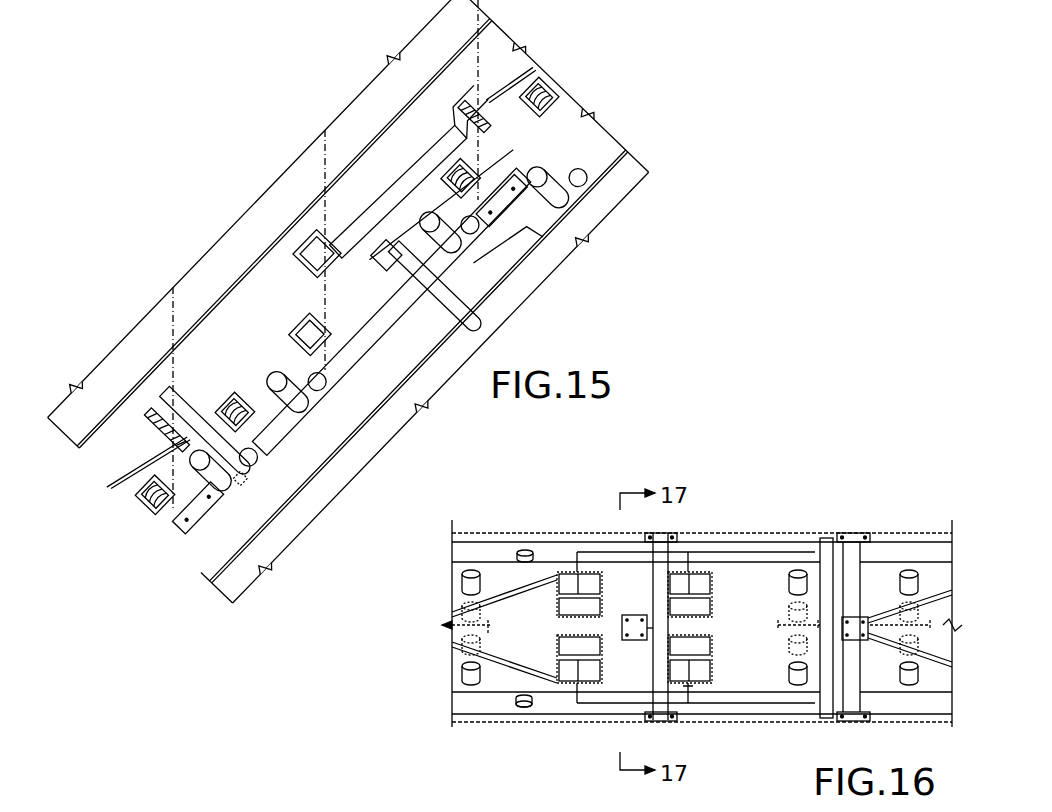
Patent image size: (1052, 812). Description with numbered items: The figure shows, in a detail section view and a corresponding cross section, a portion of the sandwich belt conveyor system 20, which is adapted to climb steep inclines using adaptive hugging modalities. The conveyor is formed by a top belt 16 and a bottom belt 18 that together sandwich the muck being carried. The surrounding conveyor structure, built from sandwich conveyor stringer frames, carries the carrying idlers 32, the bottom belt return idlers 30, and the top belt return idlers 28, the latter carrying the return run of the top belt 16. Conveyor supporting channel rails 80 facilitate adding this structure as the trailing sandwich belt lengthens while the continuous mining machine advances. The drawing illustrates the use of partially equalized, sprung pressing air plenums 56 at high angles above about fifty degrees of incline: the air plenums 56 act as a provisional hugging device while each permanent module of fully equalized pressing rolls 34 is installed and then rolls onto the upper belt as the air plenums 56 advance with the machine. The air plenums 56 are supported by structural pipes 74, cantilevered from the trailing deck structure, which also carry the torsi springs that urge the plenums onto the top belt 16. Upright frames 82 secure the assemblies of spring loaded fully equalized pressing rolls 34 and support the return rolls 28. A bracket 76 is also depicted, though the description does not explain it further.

In FIG. 15, the top belt 16 is at (288, 222).
In FIG. 16, the top belt 16 is at (933, 572).
In FIG. 15, the bottom belt 18 is at (258, 537).
In FIG. 16, the sandwich belt conveyor system 20 is at (473, 712).
In FIG. 16, the top belt return idlers 28 is at (262, 811).
In FIG. 15, the bottom belt return idlers 30 is at (237, 390).
In FIG. 16, the carrying idlers 32 is at (525, 708).
In FIG. 16, the modules of fully equalized pressing rolls 34 is at (462, 590).
In FIG. 15, the air plenums 56 is at (300, 334).
In FIG. 16, the air plenums 56 is at (578, 572).
In FIG. 15, the structural pipes 74 is at (440, 155).
In FIG. 16, the structural pipes 74 is at (790, 560).
In FIG. 16, the bracket 76 is at (690, 688).
In FIG. 15, the conveyor supporting channel rails 80 is at (263, 445).
In FIG. 15, the upright frames 82 is at (342, 248).